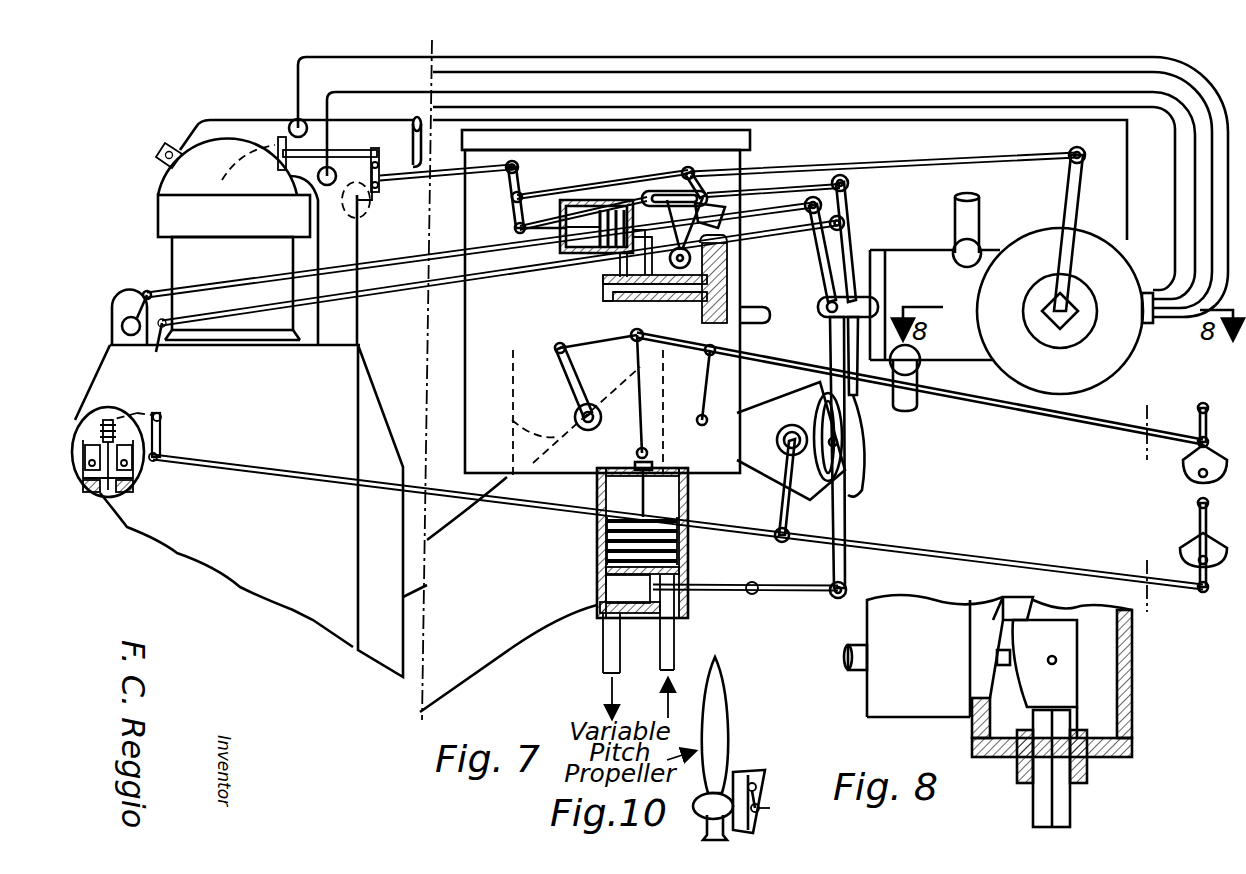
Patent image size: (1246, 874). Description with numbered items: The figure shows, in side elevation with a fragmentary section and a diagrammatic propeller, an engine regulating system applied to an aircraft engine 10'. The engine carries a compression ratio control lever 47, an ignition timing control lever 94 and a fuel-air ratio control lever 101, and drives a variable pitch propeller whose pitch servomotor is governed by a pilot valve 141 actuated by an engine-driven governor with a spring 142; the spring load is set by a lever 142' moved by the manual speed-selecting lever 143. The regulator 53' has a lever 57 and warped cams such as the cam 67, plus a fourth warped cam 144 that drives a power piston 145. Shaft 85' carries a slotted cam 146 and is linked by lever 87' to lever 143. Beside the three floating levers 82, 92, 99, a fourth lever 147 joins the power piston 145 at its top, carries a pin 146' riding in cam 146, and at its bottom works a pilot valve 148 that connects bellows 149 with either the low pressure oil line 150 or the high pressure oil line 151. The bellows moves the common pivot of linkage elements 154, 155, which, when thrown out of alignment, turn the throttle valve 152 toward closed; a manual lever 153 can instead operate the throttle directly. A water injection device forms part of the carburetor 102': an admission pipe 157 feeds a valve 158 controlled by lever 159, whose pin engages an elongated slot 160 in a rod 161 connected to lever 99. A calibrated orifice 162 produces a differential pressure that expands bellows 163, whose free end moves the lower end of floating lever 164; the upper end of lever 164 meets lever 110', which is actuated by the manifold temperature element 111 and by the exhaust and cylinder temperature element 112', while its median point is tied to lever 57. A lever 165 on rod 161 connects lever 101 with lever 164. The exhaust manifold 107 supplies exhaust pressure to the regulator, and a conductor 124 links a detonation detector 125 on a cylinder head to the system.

In FIG. 7, the conductor 124 is at (200, 122).
In FIG. 7, the exhaust manifold 107 is at (250, 127).
In FIG. 7, the detonation detector 125 is at (163, 158).
In FIG. 7, the temperature responsive element 112' is at (226, 169).
In FIG. 7, the floating lever 110' is at (395, 154).
In FIG. 7, the manifold temperature responsive element 111 is at (366, 204).
In FIG. 7, the ignition timing control lever 94 is at (141, 292).
In FIG. 7, the compression ratio control lever 47 is at (157, 352).
In FIG. 7, the carburetor 102' is at (574, 301).
In FIG. 7, the floating lever 164 is at (513, 213).
In FIG. 7, the resilient bellows 163 is at (570, 255).
In FIG. 7, the elongated slot 160 is at (665, 190).
In FIG. 7, the lever 165 is at (879, 191).
In FIG. 7, the lever 159 is at (665, 215).
In FIG. 7, the fuel-air ratio control lever 101 is at (720, 240).
In FIG. 7, the control valve 158 is at (730, 283).
In FIG. 7, the calibrated orifice 162 is at (607, 288).
In FIG. 7, the rod 161 is at (815, 180).
In FIG. 7, the admission pipe 157 is at (757, 318).
In FIG. 7, the linkage element 155 is at (662, 342).
In FIG. 7, the linkage element 154 is at (560, 346).
In FIG. 7, the throttle valve 152 is at (545, 436).
In FIG. 7, the resilient bellows 149 is at (612, 548).
In FIG. 7, the pilot valve 148 is at (675, 583).
In FIG. 7, the low pressure oil line 150 is at (607, 650).
In FIG. 7, the high pressure oil line 151 is at (672, 646).
In FIG. 7, the shaft 85' is at (779, 412).
In FIG. 7, the lever 87' is at (791, 441).
In FIG. 7, the cam 146 is at (678, 514).
In FIG. 7, the pin 146' is at (873, 445).
In FIG. 7, the floating lever 147 is at (847, 512).
In FIG. 7, the floating lever 99 is at (852, 186).
In FIG. 7, the floating lever 92 is at (846, 221).
In FIG. 7, the floating lever 82 is at (852, 272).
In FIG. 7, the power piston 145 is at (853, 307).
In FIG. 8, the power piston 145 is at (845, 655).
In FIG. 7, the regulator 53' is at (938, 395).
In FIG. 8, the regulator 53' is at (935, 640).
In FIG. 7, the lever 57 is at (1067, 190).
In FIG. 7, the manual lever 153 is at (1203, 404).
In FIG. 7, the manual lever 143 is at (1198, 505).
In FIG. 7, the aircraft engine 10' is at (336, 528).
In FIG. 7, the pilot valve 141 is at (125, 498).
In FIG. 7, the spring 142 is at (143, 457).
In FIG. 7, the lever 142' is at (159, 437).
In FIG. 10, the lever 142' is at (782, 780).
In FIG. 8, the warped cam 67 is at (1135, 617).
In FIG. 8, the warped cam 144 is at (1067, 679).